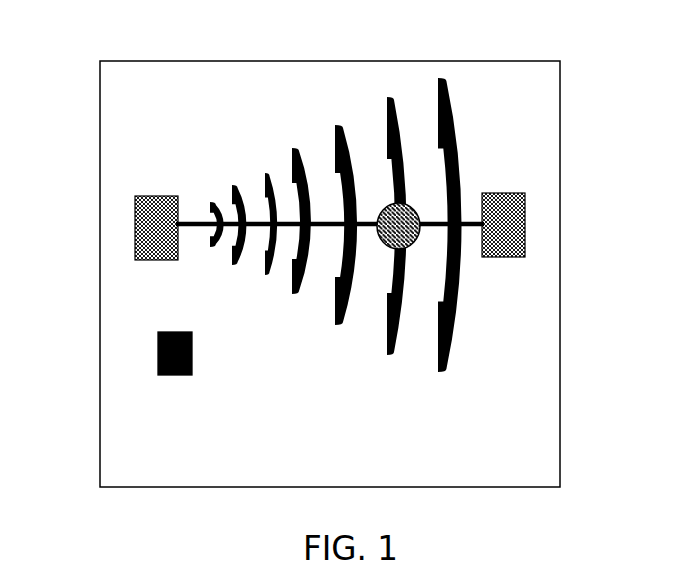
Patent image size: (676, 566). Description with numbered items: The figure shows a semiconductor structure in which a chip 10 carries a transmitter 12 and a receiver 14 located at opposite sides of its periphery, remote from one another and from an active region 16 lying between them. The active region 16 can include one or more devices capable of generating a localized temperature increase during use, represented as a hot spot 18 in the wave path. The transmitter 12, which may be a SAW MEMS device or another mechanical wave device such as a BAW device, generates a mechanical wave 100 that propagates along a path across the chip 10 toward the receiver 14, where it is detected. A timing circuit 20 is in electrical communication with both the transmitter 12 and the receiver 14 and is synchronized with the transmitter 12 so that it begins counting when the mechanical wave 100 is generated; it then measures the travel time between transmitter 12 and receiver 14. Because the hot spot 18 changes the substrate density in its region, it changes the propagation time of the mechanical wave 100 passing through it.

The chip 10 is at (107, 100).
The transmitter 12 is at (143, 243).
The receiver 14 is at (526, 207).
The active region 16 is at (411, 248).
The hot spot 18 is at (408, 236).
The timing circuit 20 is at (158, 365).
The mechanical wave 100 is at (457, 142).